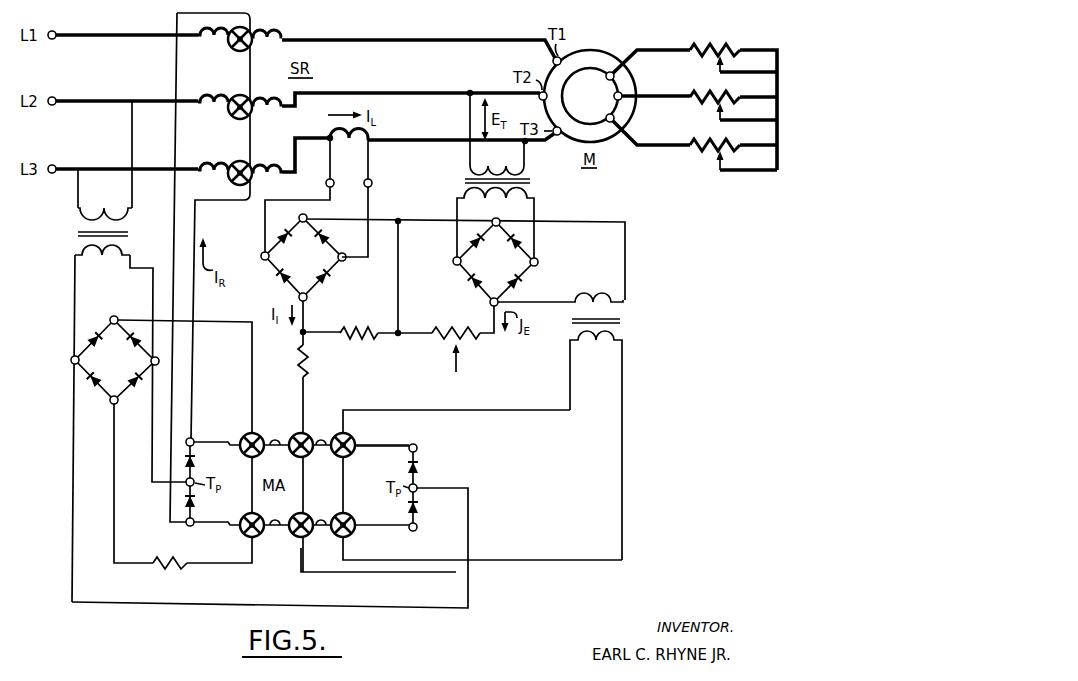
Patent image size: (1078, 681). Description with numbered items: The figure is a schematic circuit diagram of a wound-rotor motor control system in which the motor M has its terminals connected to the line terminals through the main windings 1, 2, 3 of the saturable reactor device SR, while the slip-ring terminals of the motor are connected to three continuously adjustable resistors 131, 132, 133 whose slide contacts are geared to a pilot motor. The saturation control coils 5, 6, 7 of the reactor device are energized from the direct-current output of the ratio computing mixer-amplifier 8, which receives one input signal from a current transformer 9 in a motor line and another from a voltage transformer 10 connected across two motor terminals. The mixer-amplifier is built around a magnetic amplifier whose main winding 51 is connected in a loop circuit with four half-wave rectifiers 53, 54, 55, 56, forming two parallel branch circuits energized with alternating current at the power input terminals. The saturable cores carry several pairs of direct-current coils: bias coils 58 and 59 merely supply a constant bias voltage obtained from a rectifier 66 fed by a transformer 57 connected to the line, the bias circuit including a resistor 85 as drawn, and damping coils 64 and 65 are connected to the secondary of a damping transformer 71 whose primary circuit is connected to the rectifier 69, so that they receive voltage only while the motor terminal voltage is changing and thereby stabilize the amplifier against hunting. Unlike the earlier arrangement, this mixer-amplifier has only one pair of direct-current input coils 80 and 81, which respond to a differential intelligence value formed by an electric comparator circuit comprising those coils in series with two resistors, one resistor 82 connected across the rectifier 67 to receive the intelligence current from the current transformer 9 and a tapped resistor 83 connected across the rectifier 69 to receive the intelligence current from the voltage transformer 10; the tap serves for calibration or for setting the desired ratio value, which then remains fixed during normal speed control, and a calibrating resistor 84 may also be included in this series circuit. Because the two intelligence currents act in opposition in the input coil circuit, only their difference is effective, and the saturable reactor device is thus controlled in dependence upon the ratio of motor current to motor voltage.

The main winding of saturable reactor device 1 is at (275, 33).
The main winding of saturable reactor device 2 is at (206, 92).
The main winding of saturable reactor device 3 is at (206, 161).
The saturation control coil 5 is at (250, 22).
The saturation control coil 6 is at (251, 80).
The saturation control coil 7 is at (257, 134).
The mixer-amplifier 8 is at (398, 339).
The current transformer 9 is at (353, 153).
The voltage transformer 10 is at (465, 181).
The main winding of magnetic amplifier 51 is at (369, 446).
The half-wave rectifier 53 is at (197, 463).
The half-wave rectifier 54 is at (197, 502).
The half-wave rectifier 55 is at (420, 470).
The half-wave rectifier 56 is at (420, 508).
The transformer 57 is at (128, 234).
The direct-current bias coil 58 is at (246, 432).
The direct-current bias coil 59 is at (246, 536).
The direct-current damping coil 64 is at (338, 430).
The direct-current damping coil 65 is at (350, 545).
The rectifier 66 is at (124, 369).
The rectifier 67 is at (313, 265).
The rectifier 69 is at (506, 270).
The damping transformer 71 is at (628, 322).
The direct-current input coil 80 is at (292, 430).
The direct-current input coil 81 is at (292, 550).
The resistor 82 is at (370, 346).
The potentiometer 83 is at (462, 344).
The calibrating resistor 84 is at (297, 347).
The resistor 85 is at (172, 576).
The resistor 131 is at (693, 48).
The resistor 132 is at (705, 94).
The resistor 133 is at (708, 143).